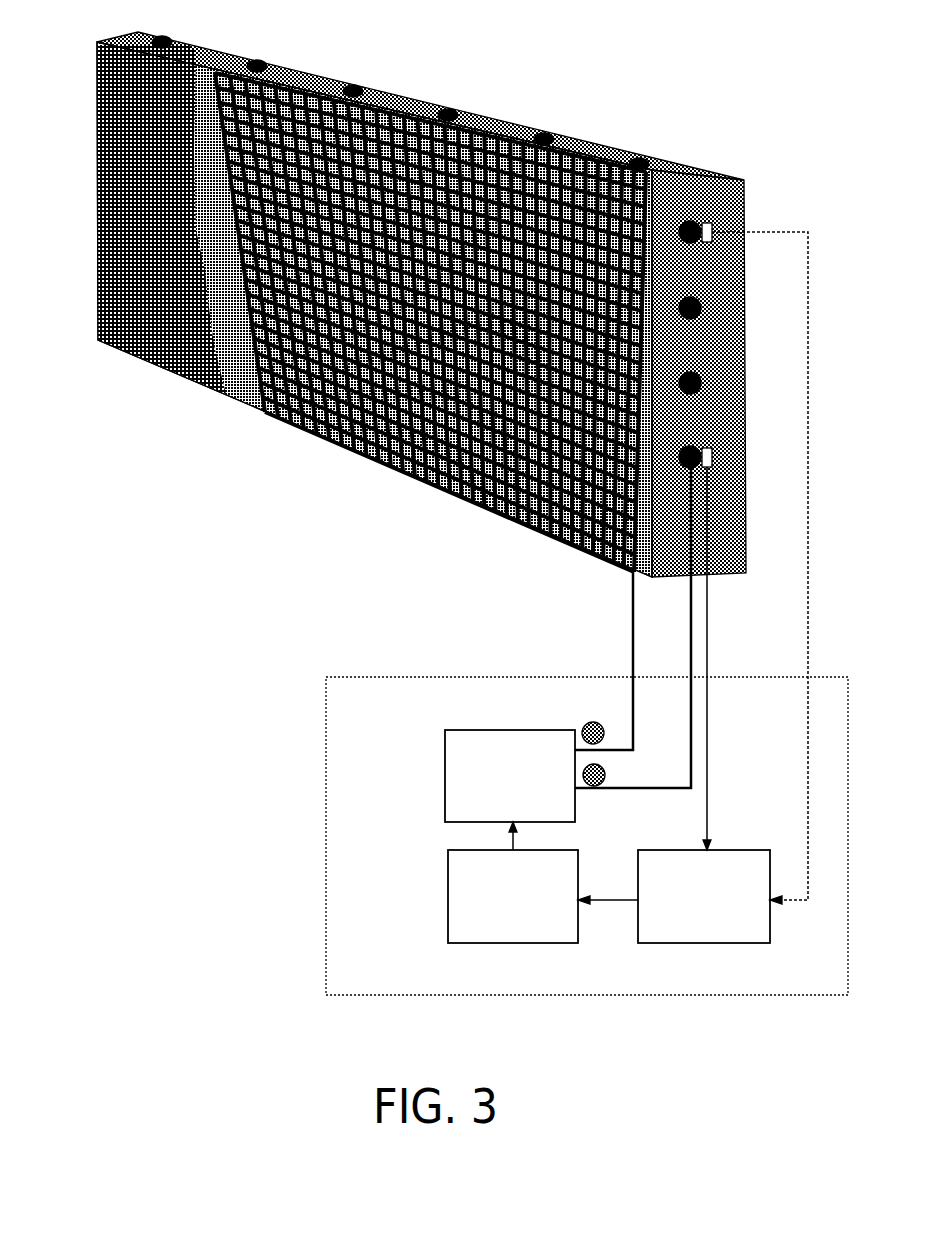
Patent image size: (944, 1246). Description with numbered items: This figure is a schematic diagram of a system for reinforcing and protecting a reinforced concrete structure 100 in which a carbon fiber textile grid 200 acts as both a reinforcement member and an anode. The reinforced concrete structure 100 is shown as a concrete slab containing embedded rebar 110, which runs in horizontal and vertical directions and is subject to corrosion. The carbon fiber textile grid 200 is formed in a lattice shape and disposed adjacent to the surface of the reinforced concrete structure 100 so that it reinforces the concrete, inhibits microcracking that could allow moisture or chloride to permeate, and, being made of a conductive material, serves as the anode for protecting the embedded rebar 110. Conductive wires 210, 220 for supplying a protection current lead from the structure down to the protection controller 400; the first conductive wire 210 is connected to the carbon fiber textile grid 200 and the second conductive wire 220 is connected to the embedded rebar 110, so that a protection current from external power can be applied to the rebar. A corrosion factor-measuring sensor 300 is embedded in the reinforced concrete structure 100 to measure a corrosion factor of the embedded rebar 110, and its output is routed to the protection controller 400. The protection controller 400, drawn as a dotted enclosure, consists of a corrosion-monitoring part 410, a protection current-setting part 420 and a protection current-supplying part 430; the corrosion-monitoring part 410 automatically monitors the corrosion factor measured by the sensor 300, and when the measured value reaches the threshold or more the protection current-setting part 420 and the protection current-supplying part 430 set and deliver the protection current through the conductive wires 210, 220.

The reinforced concrete structure 100 is at (98, 218).
The embedded rebar 110 is at (641, 158).
The carbon fiber textile grid 200 is at (565, 532).
The corrosion factor-measuring sensor 300 is at (714, 232).
The first conductive wire for supplying a protection current 210 is at (633, 618).
The conductive wire for supplying a protection current 220 is at (691, 618).
The protection controller 400 is at (415, 677).
The corrosion-monitoring part 410 is at (730, 850).
The protection current-setting part 420 is at (448, 880).
The protection current-supplying part 430 is at (445, 762).